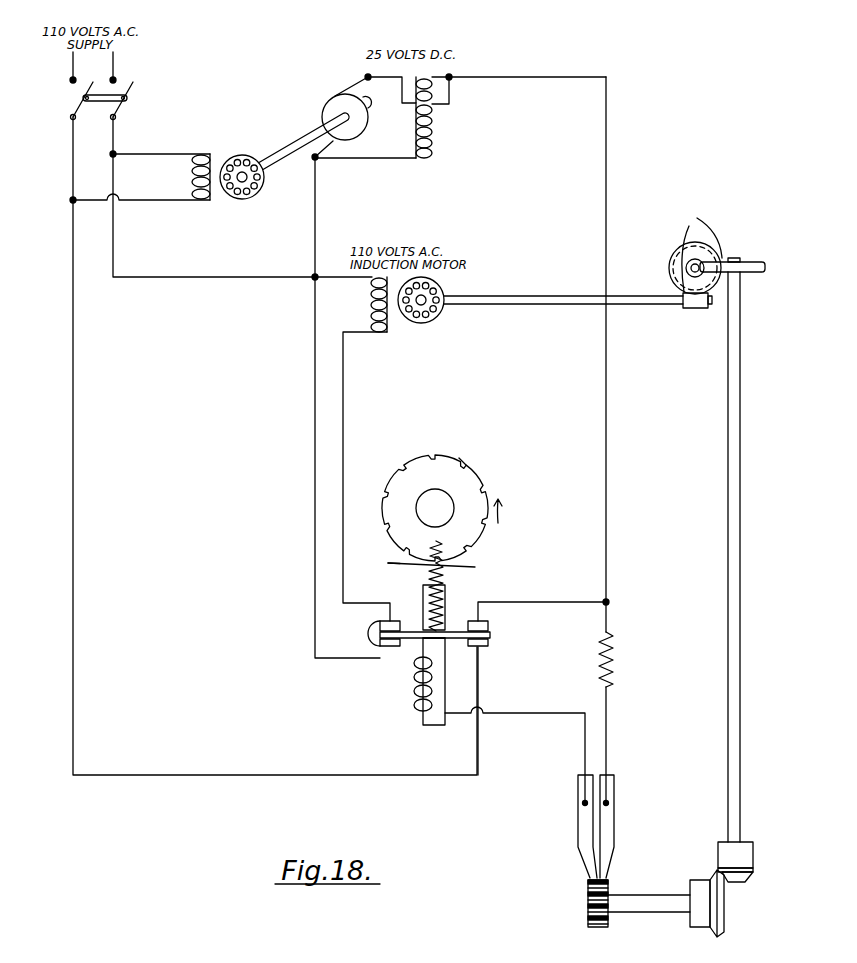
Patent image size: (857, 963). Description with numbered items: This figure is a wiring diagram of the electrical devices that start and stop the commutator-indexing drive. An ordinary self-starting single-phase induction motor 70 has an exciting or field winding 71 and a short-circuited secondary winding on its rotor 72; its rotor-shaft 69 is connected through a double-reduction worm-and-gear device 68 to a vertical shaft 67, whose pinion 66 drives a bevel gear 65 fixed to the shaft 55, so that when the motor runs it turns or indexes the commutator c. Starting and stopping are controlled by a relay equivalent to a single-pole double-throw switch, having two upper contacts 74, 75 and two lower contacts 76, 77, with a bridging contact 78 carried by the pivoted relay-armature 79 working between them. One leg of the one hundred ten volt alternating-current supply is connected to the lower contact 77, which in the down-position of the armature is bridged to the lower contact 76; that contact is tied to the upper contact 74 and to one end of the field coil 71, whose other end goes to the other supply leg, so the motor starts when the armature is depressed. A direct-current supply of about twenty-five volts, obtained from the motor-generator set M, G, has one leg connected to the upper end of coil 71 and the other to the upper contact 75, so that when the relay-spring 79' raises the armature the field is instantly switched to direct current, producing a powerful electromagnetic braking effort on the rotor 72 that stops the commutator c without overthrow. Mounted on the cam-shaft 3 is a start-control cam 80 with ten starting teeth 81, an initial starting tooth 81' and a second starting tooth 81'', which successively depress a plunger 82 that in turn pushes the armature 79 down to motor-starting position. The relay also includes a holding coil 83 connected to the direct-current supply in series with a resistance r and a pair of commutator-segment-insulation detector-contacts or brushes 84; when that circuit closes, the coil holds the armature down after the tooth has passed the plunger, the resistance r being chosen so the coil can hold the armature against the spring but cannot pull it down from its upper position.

The cam-shaft 3 is at (454, 508).
The shaft 55 is at (648, 903).
The bevel gear 65 is at (722, 908).
The pinion 66 is at (750, 878).
The vertical shaft 67 is at (742, 770).
The double-reduction worm-and-gear device 68 is at (696, 258).
The rotor-shaft 69 is at (534, 300).
The induction motor 70 is at (473, 355).
The exciting or field winding 71 is at (388, 332).
The rotor 72 is at (432, 322).
The upper contact 74 is at (394, 621).
The upper contact 75 is at (490, 626).
The lower contact 76 is at (393, 647).
The lower contact 77 is at (485, 647).
The bridging contact 78 is at (451, 632).
The relay-armature 79 is at (447, 657).
The relay-spring 79' is at (449, 544).
The start-control cam 80 is at (433, 472).
The starting teeth 81 is at (478, 460).
The initial starting tooth 81' is at (443, 570).
The second starting tooth 81'' is at (396, 561).
The plunger 82 is at (427, 577).
The holding coil 83 is at (417, 700).
The commutator-segment-insulation detector-contacts 84 is at (605, 838).
The resistance r is at (613, 660).
The commutator C is at (595, 930).
The generator G is at (315, 127).
The motor M is at (228, 168).